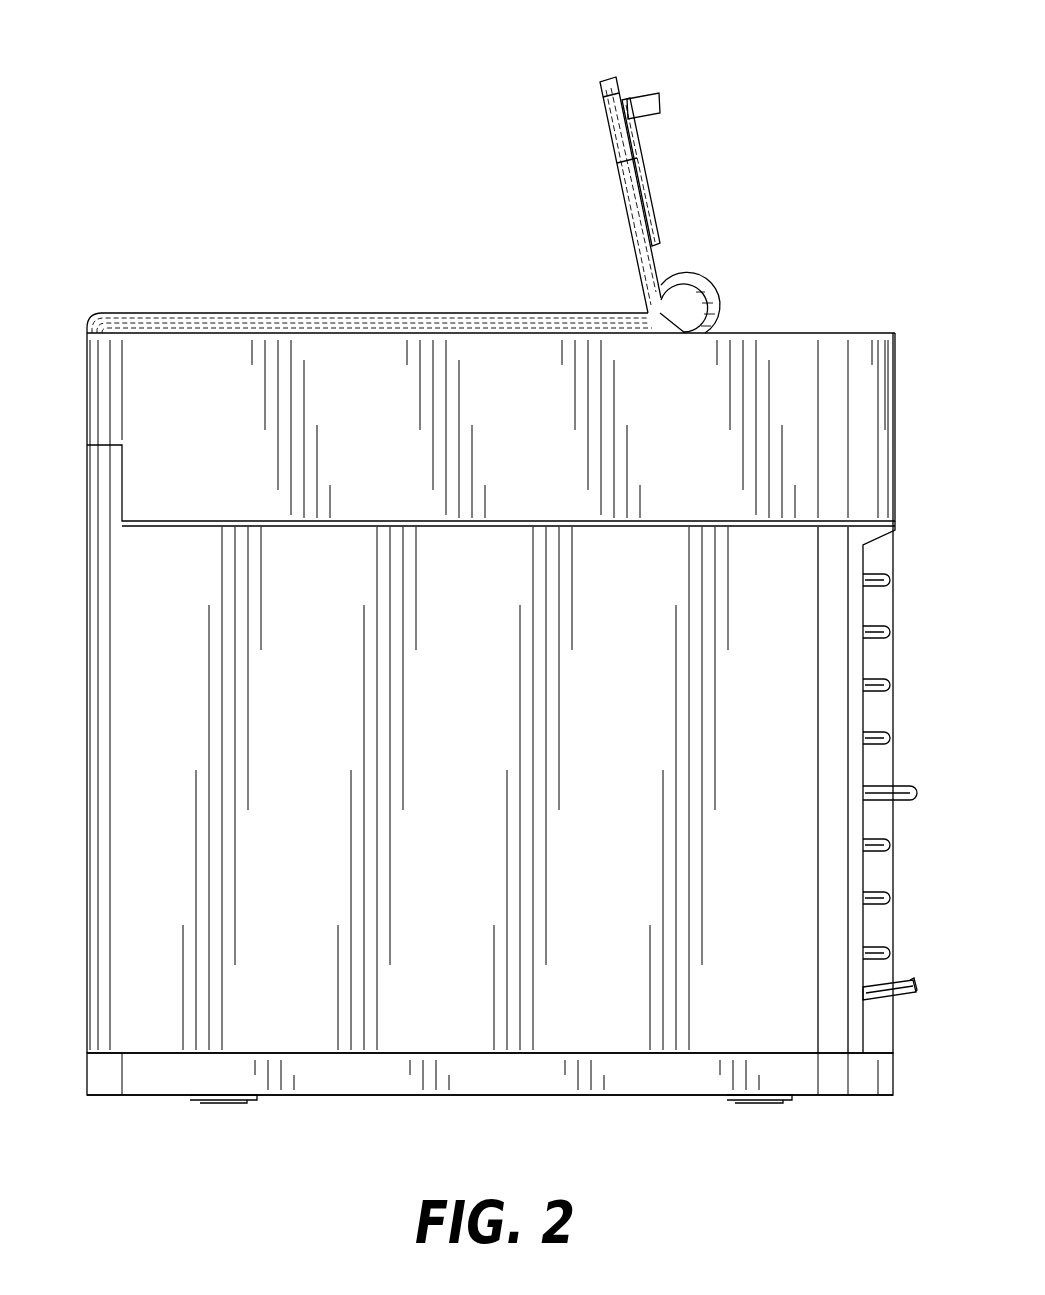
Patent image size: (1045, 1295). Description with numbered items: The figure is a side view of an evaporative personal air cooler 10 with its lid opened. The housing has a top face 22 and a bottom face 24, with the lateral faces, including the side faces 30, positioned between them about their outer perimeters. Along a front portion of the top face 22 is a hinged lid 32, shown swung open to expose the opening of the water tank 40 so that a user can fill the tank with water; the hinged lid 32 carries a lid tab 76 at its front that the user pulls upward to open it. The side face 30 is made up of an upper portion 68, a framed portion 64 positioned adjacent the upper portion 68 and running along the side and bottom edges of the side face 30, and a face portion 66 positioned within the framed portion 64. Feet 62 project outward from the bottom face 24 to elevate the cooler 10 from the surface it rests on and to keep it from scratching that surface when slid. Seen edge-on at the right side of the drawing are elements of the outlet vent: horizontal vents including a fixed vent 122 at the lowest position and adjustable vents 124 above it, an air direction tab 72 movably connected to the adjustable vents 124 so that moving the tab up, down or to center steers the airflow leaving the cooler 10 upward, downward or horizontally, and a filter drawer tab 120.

The evaporative air cooler 10 is at (283, 170).
The top face 22 is at (171, 310).
The bottom face 24 is at (131, 1100).
The side faces 30 is at (185, 787).
The hinged lid 32 is at (602, 117).
The water tank 40 is at (866, 326).
The feet 62 is at (760, 1105).
The framed portion 64 is at (146, 1079).
The face portion 66 is at (211, 885).
The upper portion 68 is at (822, 452).
The air direction tab 72 is at (903, 792).
The lid tab 76 is at (604, 82).
The filter drawer tab 120 is at (912, 981).
The fixed vent 122 is at (888, 1002).
The adjustable vent 124 is at (873, 898).